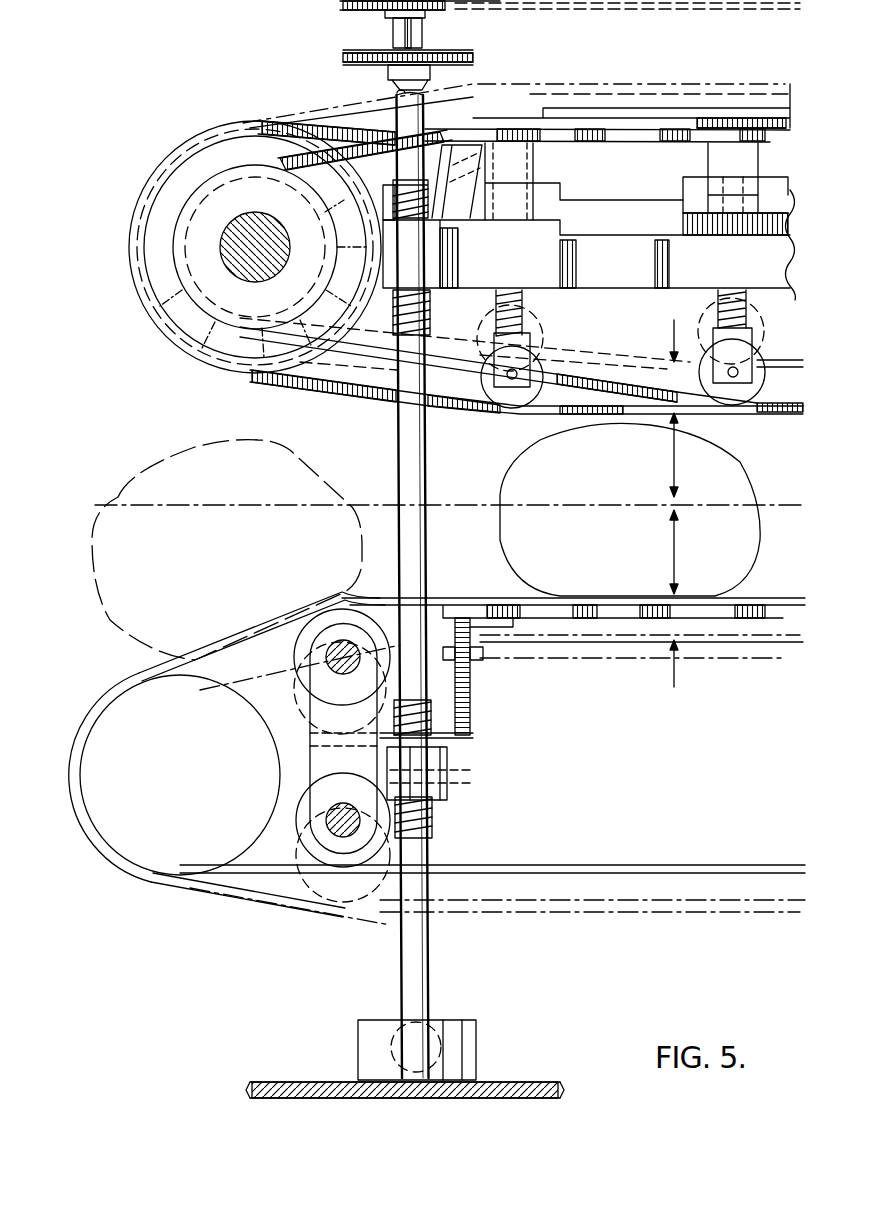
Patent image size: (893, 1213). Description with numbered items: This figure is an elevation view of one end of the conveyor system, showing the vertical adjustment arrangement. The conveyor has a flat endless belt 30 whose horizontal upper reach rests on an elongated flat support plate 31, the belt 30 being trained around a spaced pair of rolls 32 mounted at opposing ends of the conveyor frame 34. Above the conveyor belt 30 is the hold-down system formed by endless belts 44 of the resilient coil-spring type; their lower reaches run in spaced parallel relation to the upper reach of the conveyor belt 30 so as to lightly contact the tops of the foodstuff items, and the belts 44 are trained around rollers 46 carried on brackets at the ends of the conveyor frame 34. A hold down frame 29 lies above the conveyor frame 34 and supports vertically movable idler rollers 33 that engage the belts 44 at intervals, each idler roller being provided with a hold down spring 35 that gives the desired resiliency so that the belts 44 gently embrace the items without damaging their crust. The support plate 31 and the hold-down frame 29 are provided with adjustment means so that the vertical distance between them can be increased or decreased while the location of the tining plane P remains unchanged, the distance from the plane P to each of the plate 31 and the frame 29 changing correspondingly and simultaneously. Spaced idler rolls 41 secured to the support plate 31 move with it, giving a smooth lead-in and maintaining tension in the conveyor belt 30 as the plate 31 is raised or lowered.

The hold down frame 29 is at (597, 253).
The endless belt 30 is at (106, 704).
The support plate 31 is at (594, 620).
The rolls 32 is at (135, 848).
The idler rollers 33 is at (753, 360).
The conveyor frame 34 is at (468, 750).
The hold down spring 35 is at (530, 300).
The idler rolls 41 is at (300, 822).
The hold-down belts 44 is at (337, 385).
The rollers 46 is at (190, 322).
The tining plane P is at (478, 504).